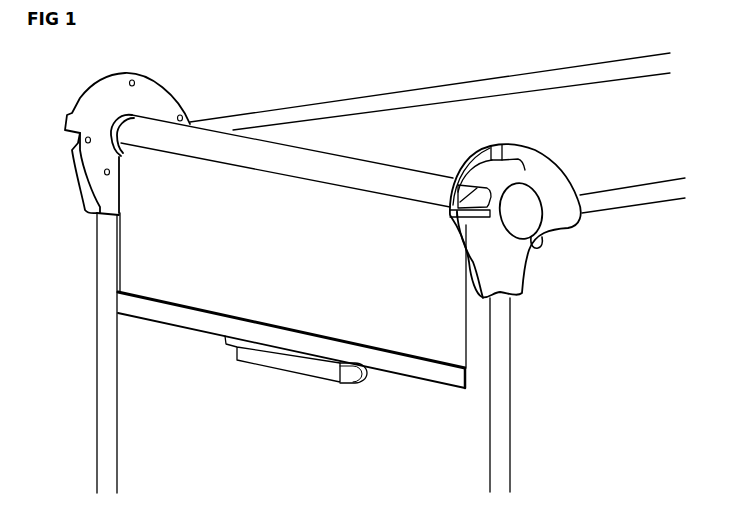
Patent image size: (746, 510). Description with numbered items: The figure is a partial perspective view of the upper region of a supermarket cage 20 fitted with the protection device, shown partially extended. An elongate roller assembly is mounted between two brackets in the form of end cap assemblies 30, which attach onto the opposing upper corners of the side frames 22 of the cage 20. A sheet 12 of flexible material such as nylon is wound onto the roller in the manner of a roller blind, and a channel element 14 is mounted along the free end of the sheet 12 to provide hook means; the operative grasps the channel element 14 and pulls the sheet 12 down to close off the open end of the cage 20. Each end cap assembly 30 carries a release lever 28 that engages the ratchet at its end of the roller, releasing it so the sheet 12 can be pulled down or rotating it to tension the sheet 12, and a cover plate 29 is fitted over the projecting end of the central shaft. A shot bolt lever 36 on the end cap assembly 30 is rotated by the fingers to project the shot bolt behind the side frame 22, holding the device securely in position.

The sheet of flexible material 12 is at (292, 255).
The channel element 14 is at (160, 322).
The supermarket cage 20 is at (510, 365).
The side frame 22 is at (327, 96).
The release lever 28 is at (452, 207).
The cover plate 29 is at (538, 198).
The end cap assembly 30 is at (77, 99).
The shot bolt lever 36 is at (535, 250).